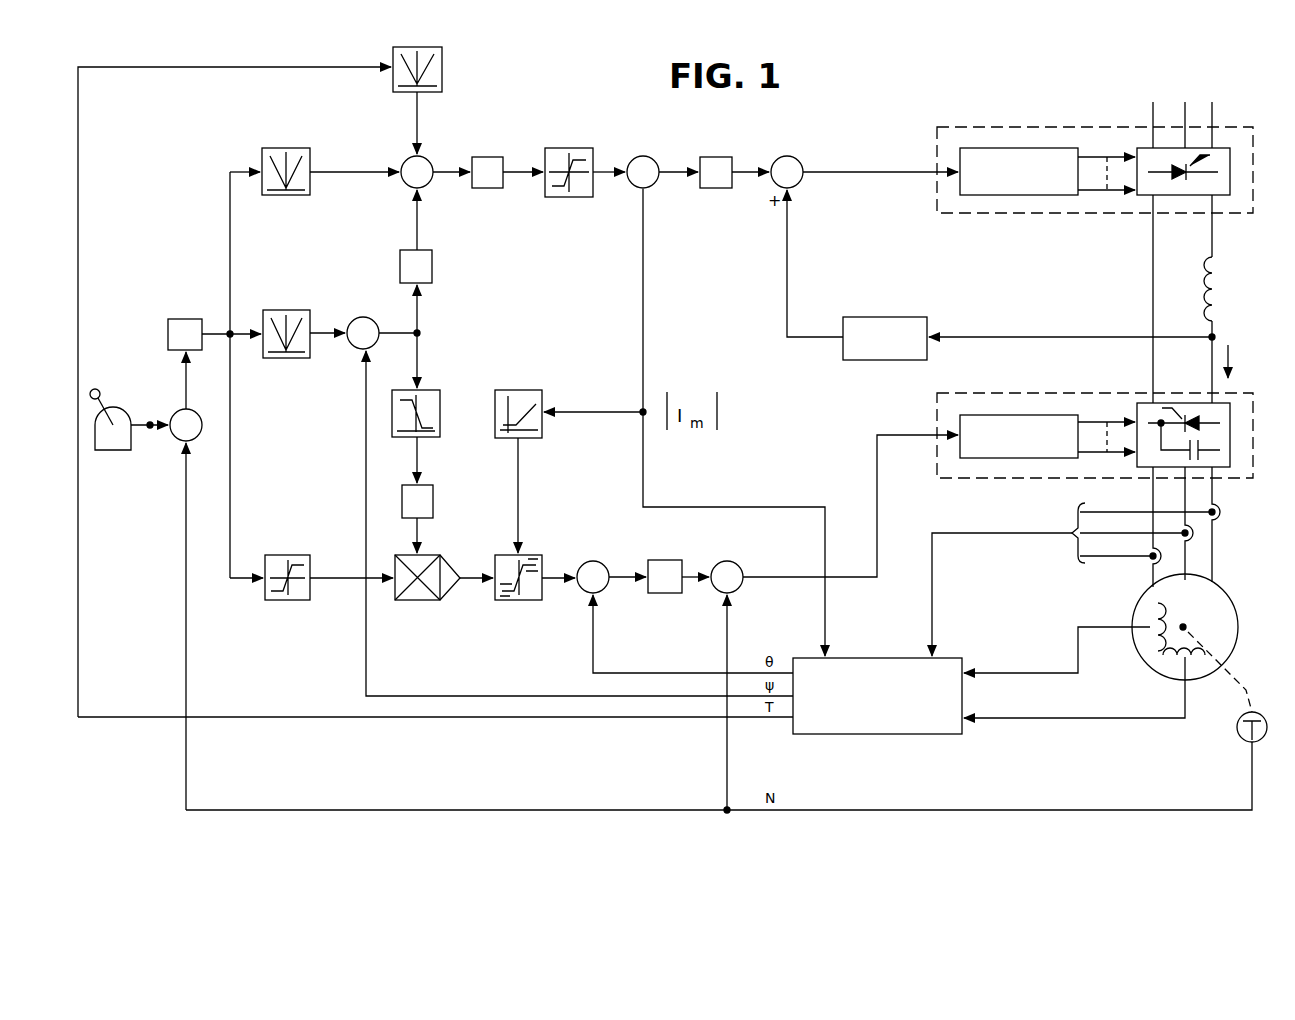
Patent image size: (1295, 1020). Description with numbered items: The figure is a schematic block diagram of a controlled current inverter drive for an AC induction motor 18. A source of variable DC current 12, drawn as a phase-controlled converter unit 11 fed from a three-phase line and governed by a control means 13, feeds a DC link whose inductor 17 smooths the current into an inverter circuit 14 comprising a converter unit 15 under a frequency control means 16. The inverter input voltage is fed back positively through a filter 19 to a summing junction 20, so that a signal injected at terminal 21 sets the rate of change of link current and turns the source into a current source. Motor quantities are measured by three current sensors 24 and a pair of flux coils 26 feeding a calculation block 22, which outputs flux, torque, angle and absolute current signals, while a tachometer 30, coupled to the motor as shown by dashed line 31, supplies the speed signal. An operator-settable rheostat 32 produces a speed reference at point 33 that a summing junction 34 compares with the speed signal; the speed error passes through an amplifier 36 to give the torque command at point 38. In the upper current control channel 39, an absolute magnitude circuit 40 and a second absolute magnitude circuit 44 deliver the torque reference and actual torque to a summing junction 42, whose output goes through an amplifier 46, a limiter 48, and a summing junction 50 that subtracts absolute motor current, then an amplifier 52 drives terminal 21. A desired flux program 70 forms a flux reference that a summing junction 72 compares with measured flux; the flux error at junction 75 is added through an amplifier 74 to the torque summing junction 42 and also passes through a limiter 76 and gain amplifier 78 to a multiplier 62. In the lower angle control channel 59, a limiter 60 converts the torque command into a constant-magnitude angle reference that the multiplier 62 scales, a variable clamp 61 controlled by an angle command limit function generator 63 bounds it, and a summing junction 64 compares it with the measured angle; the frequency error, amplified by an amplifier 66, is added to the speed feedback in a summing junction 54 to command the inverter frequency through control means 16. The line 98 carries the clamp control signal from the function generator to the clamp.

The converter unit 11 is at (1234, 140).
The source of variable DC current 12 is at (983, 127).
The control means 13 is at (1038, 148).
The inverter circuit 14 is at (1006, 393).
The converter unit 15 is at (1230, 479).
The control means 16 is at (1054, 415).
The inductor 17 is at (1221, 282).
The AC induction motor 18 is at (1140, 606).
The filter 19 is at (884, 317).
The summing junction 20 is at (797, 157).
The terminal 21 is at (743, 182).
The calculation block 22 is at (874, 658).
The current sensors 24 is at (1210, 544).
The flux coils 26 is at (1148, 660).
The tachometer 30 is at (1236, 738).
The dashed line 31 is at (1247, 686).
The rheostat 32 is at (107, 408).
The point 33 is at (140, 434).
The summing junction 34 is at (201, 414).
The amplifier 36 is at (186, 319).
The point 38 is at (240, 327).
The current control channel 39 is at (457, 130).
The absolute magnitude circuit 40 is at (296, 148).
The summing junction 42 is at (430, 189).
The absolute magnitude circuit 44 is at (442, 84).
The amplifier 46 is at (487, 188).
The limiter 48 is at (555, 148).
The summing junction 50 is at (650, 156).
The amplifier 52 is at (714, 157).
The summing junction 54 is at (735, 559).
The angle control channel 59 is at (472, 615).
The limiter 60 is at (291, 555).
The variable clamp 61 is at (495, 559).
The multiplier 62 is at (420, 599).
The angle command limit function generator 63 is at (527, 389).
The summing junction 64 is at (590, 559).
The amplifier 66 is at (662, 559).
The desired flux program 70 is at (296, 310).
The summing junction 72 is at (370, 318).
The amplifier 74 is at (398, 263).
The junction 75 is at (425, 334).
The limiter 76 is at (440, 392).
The gain amplifier 78 is at (433, 487).
The signal line 98 is at (524, 499).